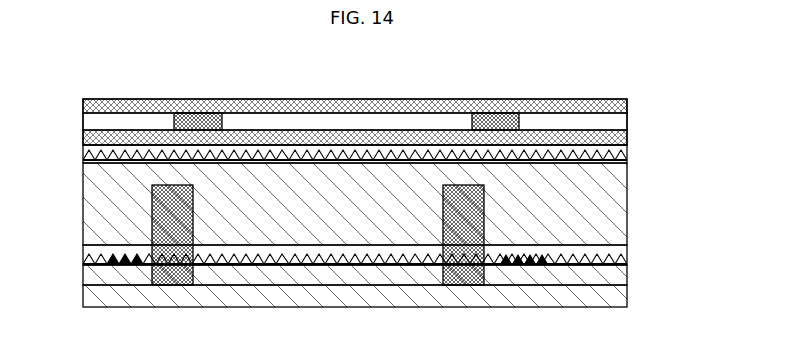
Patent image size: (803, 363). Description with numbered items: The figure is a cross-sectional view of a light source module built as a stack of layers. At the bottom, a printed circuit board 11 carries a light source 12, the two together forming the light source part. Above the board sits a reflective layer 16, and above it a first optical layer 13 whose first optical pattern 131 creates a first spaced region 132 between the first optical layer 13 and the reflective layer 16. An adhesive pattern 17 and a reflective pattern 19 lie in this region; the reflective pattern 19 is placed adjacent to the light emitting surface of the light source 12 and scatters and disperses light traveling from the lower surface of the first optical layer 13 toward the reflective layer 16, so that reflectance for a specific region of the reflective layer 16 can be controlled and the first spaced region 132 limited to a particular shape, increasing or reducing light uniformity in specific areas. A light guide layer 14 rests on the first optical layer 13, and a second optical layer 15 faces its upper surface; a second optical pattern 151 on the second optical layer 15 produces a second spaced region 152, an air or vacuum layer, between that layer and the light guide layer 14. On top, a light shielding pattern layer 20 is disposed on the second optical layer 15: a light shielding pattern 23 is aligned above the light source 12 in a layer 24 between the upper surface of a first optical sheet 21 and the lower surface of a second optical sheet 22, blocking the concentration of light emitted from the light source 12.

The printed circuit board 11 is at (620, 297).
The light source 12 is at (152, 222).
The first optical layer 13 is at (627, 247).
The first optical pattern 131 is at (342, 267).
The first spaced region 132 is at (315, 267).
The light guide layer 14 is at (618, 200).
The second optical layer 15 is at (629, 152).
The second optical pattern 151 is at (100, 160).
The second spaced region 152 is at (83, 187).
The reflective layer 16 is at (618, 275).
The adhesive pattern 17 is at (82, 250).
The reflective pattern 19 is at (223, 267).
The display panel 20 is at (685, 96).
The first optical sheet 21 is at (628, 138).
The second optical sheet 22 is at (628, 103).
The light shielding pattern 23 is at (202, 116).
The liquid crystal layer 24 is at (628, 120).